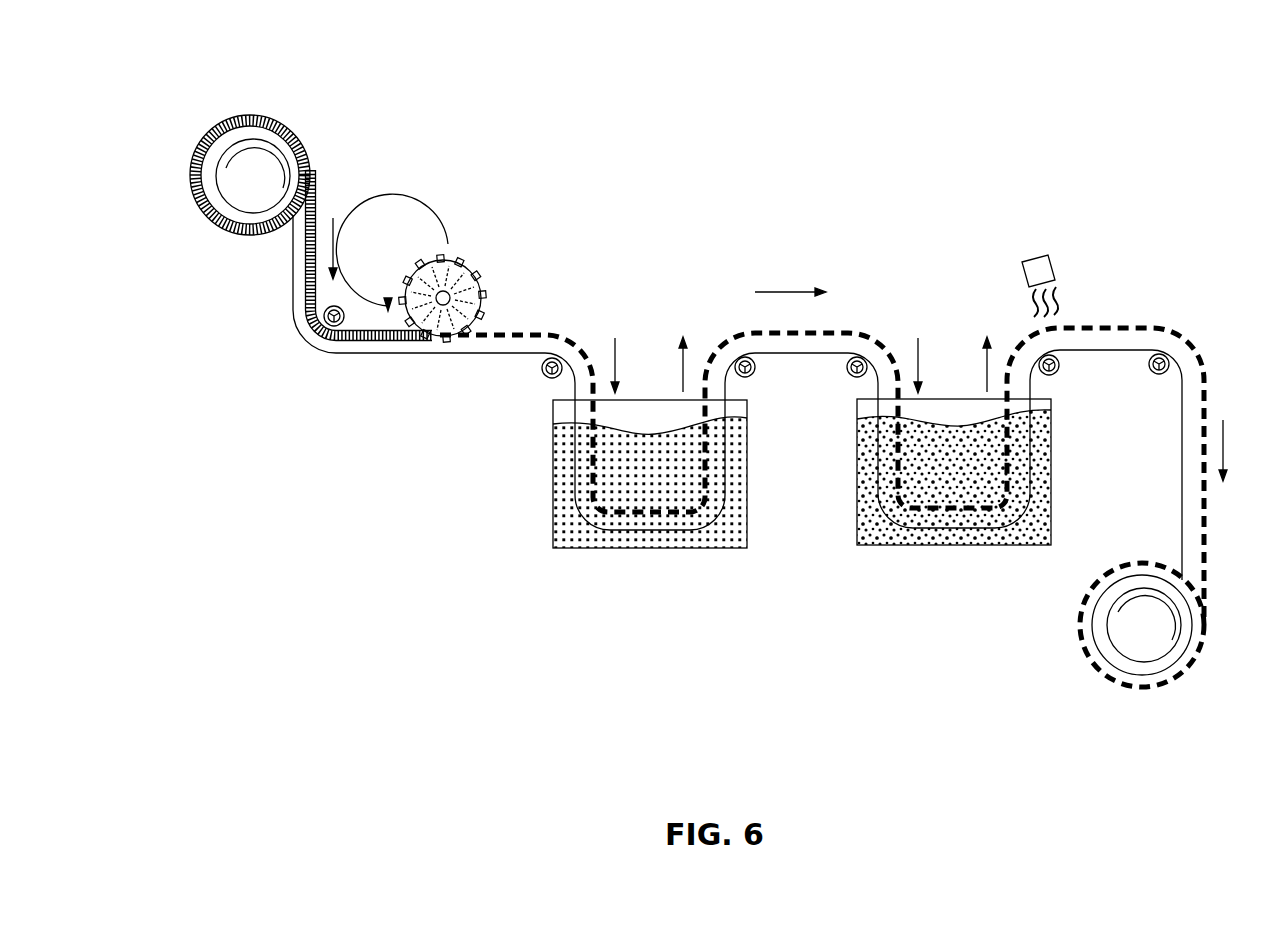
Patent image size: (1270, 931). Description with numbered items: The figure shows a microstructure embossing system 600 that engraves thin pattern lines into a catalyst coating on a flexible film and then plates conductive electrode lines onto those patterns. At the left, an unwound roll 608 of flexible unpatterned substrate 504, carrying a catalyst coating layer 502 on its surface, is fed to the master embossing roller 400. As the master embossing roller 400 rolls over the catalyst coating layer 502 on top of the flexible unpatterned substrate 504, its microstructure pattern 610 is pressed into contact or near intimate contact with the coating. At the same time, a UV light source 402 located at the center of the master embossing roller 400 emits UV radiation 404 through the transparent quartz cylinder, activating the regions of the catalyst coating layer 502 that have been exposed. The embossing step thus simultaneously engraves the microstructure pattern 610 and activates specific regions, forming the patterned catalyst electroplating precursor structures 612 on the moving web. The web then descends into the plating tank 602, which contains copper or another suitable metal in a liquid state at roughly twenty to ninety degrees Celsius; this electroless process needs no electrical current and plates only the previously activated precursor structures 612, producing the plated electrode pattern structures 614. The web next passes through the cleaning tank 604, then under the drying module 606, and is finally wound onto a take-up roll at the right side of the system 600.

The microstructure embossing system 600 is at (965, 146).
The master embossing roller 400 is at (444, 173).
The UV light source 402 is at (443, 300).
The UV radiation 404 is at (465, 278).
The catalyst coating layer 502 is at (317, 223).
The flexible unpatterned substrate 504 is at (300, 272).
The unwound roll 608 is at (253, 132).
The microstructure pattern 610 is at (483, 313).
The patterned catalyst electroplating precursor structures 612 is at (562, 337).
The plated electrode pattern structures 614 is at (720, 337).
The plating tank 602 is at (568, 535).
The cleaning tank 604 is at (885, 537).
The drying module 606 is at (1050, 258).